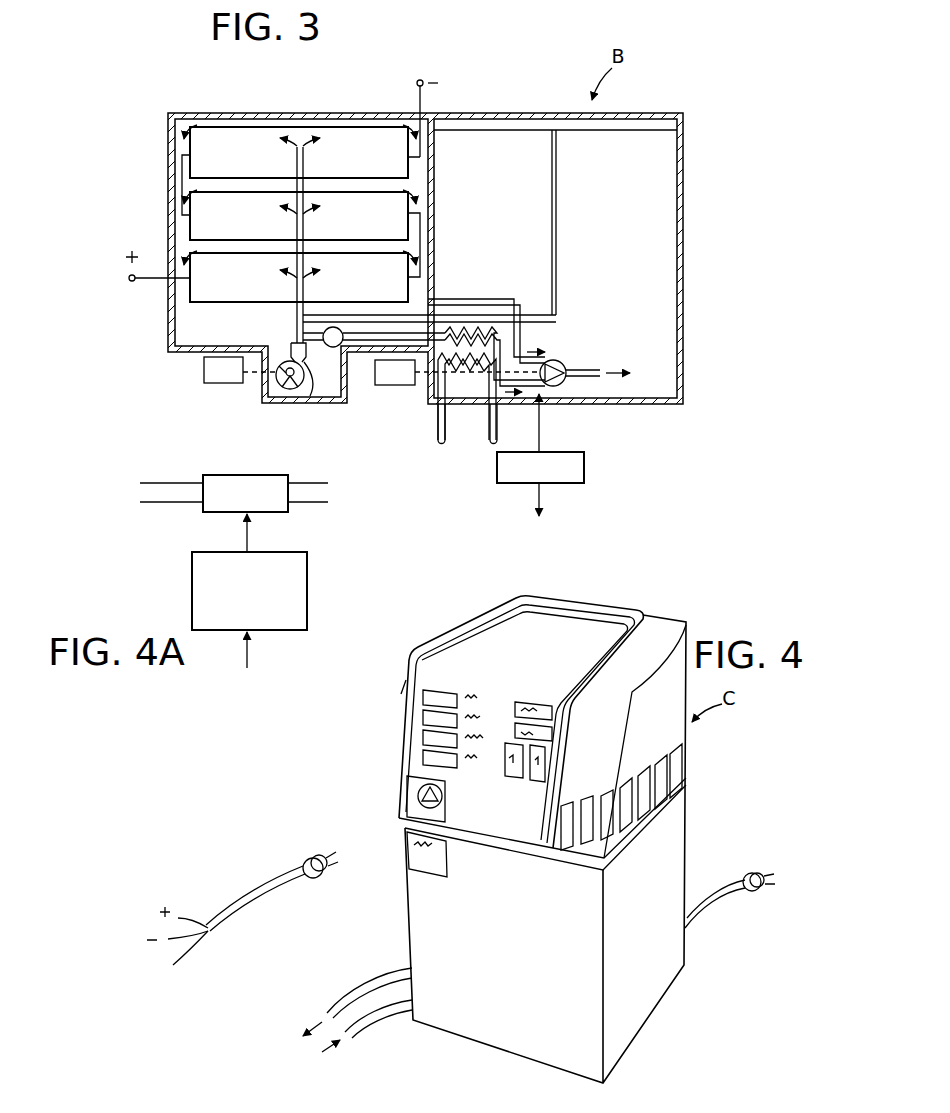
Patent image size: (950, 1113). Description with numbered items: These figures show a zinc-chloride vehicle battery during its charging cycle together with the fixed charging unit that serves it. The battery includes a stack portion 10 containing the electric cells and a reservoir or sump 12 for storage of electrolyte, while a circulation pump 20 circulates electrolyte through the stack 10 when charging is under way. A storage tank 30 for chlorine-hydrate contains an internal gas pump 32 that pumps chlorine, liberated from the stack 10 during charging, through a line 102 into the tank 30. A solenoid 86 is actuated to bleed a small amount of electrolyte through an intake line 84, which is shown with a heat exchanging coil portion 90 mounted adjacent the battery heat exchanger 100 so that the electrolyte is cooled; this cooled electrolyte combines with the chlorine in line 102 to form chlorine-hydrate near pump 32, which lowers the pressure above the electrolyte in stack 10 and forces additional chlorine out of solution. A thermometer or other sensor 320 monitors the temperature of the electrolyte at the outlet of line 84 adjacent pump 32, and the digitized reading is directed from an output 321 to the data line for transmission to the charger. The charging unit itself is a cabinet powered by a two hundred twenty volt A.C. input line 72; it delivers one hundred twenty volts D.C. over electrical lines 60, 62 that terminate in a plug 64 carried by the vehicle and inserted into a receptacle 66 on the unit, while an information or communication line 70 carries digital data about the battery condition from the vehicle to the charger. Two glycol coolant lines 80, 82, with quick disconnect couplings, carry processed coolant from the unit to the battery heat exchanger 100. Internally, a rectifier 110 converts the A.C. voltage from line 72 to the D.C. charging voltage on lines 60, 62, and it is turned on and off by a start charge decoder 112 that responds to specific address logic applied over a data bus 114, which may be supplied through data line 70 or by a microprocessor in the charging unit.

In FIG. 3, the stack portion 10 is at (330, 113).
In FIG. 3, the reservoir or sump 12 is at (350, 392).
In FIG. 3, the circulation pump 20 is at (308, 384).
In FIG. 3, the storage tank 30 is at (683, 232).
In FIG. 3, the internal pump 32 is at (560, 362).
In FIG. 4A, the electrical line 60 is at (165, 483).
In FIG. 4, the electrical line 60 is at (207, 926).
In FIG. 4A, the electrical line 62 is at (165, 502).
In FIG. 4, the electrical line 62 is at (208, 940).
In FIG. 4, the plug 64 is at (320, 858).
In FIG. 4, the receptacle 66 is at (443, 798).
In FIG. 4, the information or communication line 70 is at (190, 965).
In FIG. 4A, the input line 72 is at (302, 483).
In FIG. 4, the input line 72 is at (725, 886).
In FIG. 3, the glycol coolant line 80 is at (438, 430).
In FIG. 4, the glycol coolant line 80 is at (372, 985).
In FIG. 3, the glycol coolant line 82 is at (490, 430).
In FIG. 4, the glycol coolant line 82 is at (376, 1018).
In FIG. 3, the intake line 84 is at (410, 340).
In FIG. 3, the solenoid 86 is at (336, 327).
In FIG. 3, the heat exchanging coil portion 90 is at (474, 334).
In FIG. 3, the heat exchanger 100 is at (467, 398).
In FIG. 3, the line 102 is at (478, 299).
In FIG. 4A, the rectifier 110 is at (243, 475).
In FIG. 4A, the start charge decoder 112 is at (307, 592).
In FIG. 4A, the data bus 114 is at (248, 658).
In FIG. 3, the sensor 320 is at (584, 468).
In FIG. 3, the output 321 is at (544, 492).